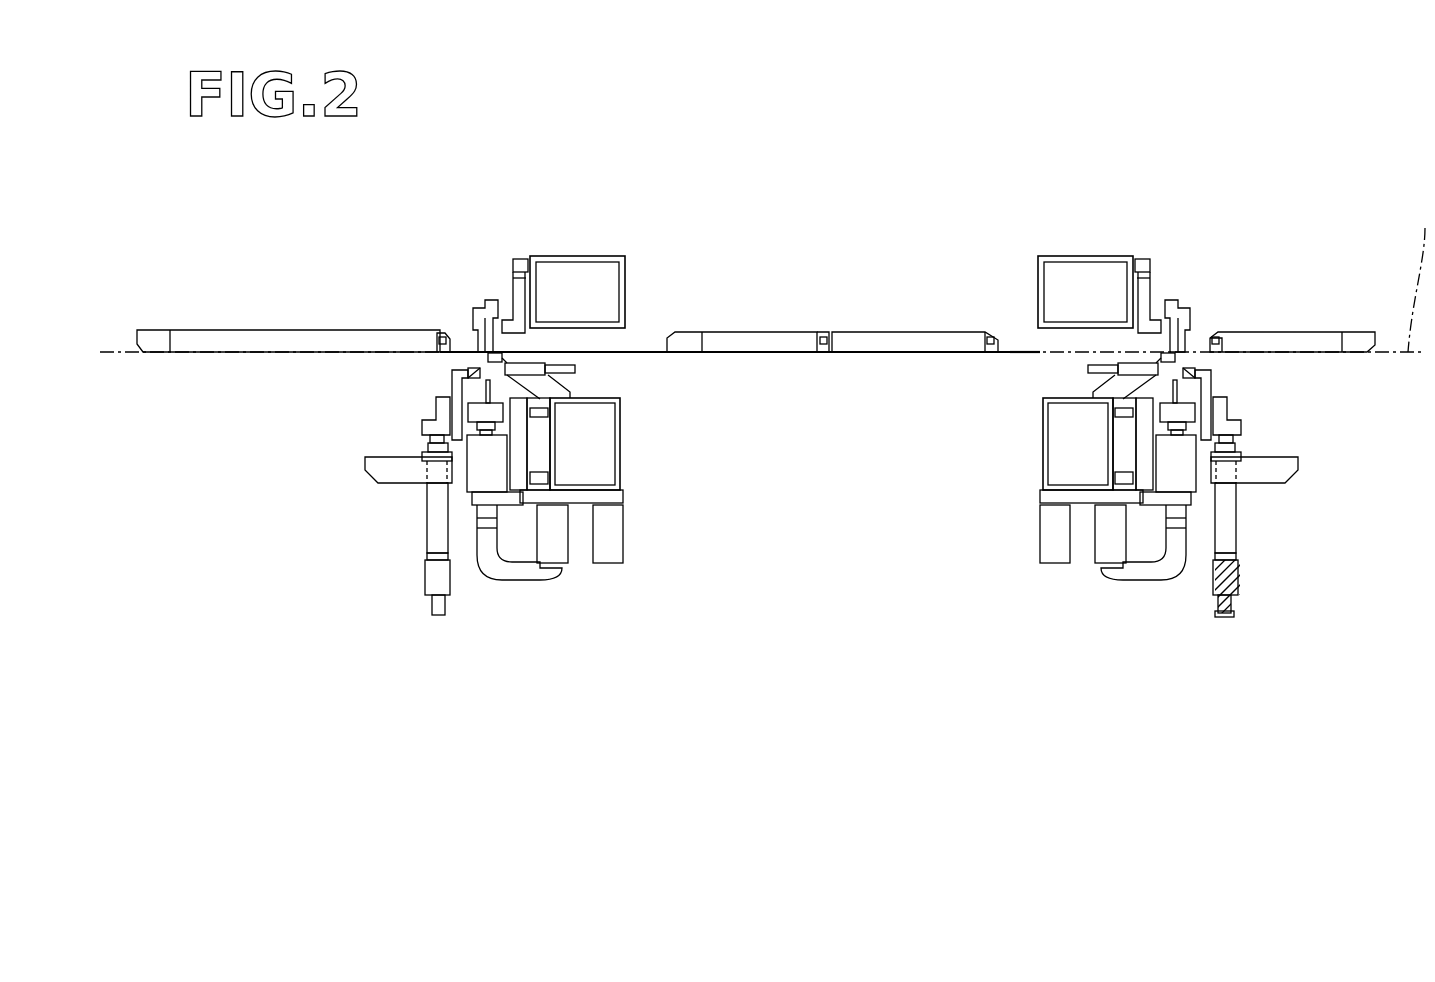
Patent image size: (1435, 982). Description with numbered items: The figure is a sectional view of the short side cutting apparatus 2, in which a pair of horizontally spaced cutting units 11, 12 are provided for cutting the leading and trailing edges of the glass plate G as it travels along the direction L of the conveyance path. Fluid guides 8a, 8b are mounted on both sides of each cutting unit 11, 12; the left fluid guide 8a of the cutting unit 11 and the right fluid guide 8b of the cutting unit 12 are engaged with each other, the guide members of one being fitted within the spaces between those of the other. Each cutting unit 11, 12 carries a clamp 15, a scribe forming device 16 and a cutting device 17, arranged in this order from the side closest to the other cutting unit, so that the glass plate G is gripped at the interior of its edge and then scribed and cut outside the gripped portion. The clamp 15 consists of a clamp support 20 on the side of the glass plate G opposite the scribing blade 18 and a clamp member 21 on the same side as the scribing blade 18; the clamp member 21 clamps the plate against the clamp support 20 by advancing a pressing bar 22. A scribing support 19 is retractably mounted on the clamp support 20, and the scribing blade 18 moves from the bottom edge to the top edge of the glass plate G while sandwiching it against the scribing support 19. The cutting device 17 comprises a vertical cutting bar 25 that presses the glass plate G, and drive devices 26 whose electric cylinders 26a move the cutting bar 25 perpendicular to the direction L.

The short side cutting apparatus 2 is at (790, 613).
The fluid guide 8a is at (318, 330).
The fluid guide 8b is at (903, 332).
The cutting unit 11 is at (510, 413).
The cutting unit 12 is at (1107, 195).
The clamp 15 is at (643, 446).
The scribe forming device 16 is at (461, 503).
The cutting device 17 is at (437, 618).
The scribing blade 18 is at (486, 352).
The scribing support 19 is at (495, 352).
The clamp support 20 is at (510, 330).
The clamp member 21 is at (582, 373).
The pressing bar 22 is at (510, 320).
The cutting bar 25 is at (465, 371).
The drive device 26 is at (413, 437).
The electric cylinder 26a is at (428, 508).
The glass plate G is at (1022, 355).
The direction of the conveyance path L is at (1419, 276).